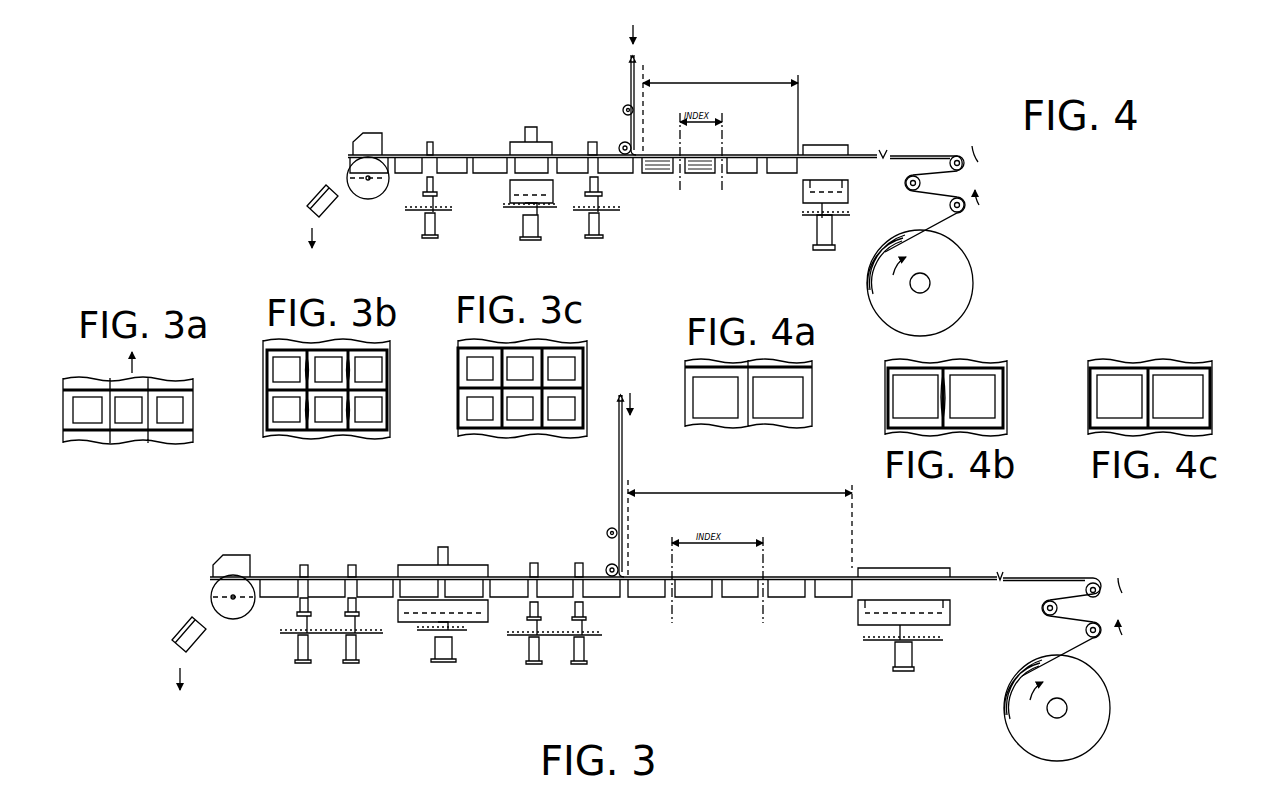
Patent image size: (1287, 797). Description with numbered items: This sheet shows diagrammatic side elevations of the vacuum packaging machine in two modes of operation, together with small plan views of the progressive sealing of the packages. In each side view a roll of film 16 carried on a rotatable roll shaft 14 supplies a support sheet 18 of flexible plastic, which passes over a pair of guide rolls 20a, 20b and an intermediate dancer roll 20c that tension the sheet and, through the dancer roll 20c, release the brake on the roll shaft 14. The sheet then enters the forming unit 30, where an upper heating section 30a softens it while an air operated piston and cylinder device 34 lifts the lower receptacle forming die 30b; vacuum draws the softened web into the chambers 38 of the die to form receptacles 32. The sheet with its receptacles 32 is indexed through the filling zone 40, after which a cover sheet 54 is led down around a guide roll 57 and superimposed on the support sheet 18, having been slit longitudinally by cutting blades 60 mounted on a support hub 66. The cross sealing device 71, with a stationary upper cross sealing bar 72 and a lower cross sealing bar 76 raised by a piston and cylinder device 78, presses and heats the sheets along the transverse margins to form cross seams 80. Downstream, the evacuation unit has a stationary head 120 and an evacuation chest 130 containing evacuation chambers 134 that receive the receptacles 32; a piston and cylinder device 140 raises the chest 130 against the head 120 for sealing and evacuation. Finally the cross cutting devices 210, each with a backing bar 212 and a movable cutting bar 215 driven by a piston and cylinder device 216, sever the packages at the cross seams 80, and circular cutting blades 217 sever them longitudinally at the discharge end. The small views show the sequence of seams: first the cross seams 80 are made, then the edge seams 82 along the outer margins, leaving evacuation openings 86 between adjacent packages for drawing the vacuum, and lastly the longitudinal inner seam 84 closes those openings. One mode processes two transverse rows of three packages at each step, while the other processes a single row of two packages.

In FIG. 4, the roll shaft 14 is at (918, 290).
In FIG. 3, the roll shaft 14 is at (1058, 712).
In FIG. 4, the roll of film 16 is at (960, 292).
In FIG. 3, the roll of film 16 is at (1100, 688).
In FIG. 4, the support sheet 18 is at (923, 155).
In FIG. 3a, the support sheet 18 is at (92, 440).
In FIG. 3b, the support sheet 18 is at (382, 433).
In FIG. 3c, the support sheet 18 is at (482, 432).
In FIG. 4a, the support sheet 18 is at (748, 393).
In FIG. 4b, the support sheet 18 is at (946, 397).
In FIG. 4c, the support sheet 18 is at (1150, 397).
In FIG. 3, the support sheet 18 is at (1065, 577).
In FIG. 4, the guide roll 20a is at (950, 207).
In FIG. 3, the guide roll 20a is at (1086, 631).
In FIG. 4, the guide roll 20b is at (950, 164).
In FIG. 3, the guide roll 20b is at (1086, 590).
In FIG. 4, the dancer roll 20c is at (920, 184).
In FIG. 3, the dancer roll 20c is at (1058, 609).
In FIG. 4, the forming unit 30 is at (862, 140).
In FIG. 3, the forming unit 30 is at (965, 572).
In FIG. 4, the upper heating section 30a is at (833, 145).
In FIG. 3, the upper heating section 30a is at (937, 568).
In FIG. 4, the lower receptacle forming die 30b is at (849, 203).
In FIG. 3, the lower receptacle forming die 30b is at (951, 622).
In FIG. 4, the receptacles 32 is at (773, 153).
In FIG. 3a, the receptacles 32 is at (73, 405).
In FIG. 3b, the receptacles 32 is at (327, 389).
In FIG. 3c, the receptacles 32 is at (521, 388).
In FIG. 4a, the receptacles 32 is at (722, 418).
In FIG. 4b, the receptacles 32 is at (944, 396).
In FIG. 4c, the receptacles 32 is at (1150, 396).
In FIG. 3, the receptacles 32 is at (815, 594).
In FIG. 4, the air operated piston and cylinder device 34 is at (817, 232).
In FIG. 3, the air operated piston and cylinder device 34 is at (895, 655).
In FIG. 4, the chambers 38 is at (803, 193).
In FIG. 3, the chambers 38 is at (950, 603).
In FIG. 4, the filling zone 40 is at (745, 84).
In FIG. 3, the filling zone 40 is at (752, 494).
In FIG. 4, the cover sheet 54 is at (638, 57).
In FIG. 3, the cover sheet 54 is at (625, 473).
In FIG. 4, the guide roll 57 is at (623, 142).
In FIG. 3, the guide roll 57 is at (610, 564).
In FIG. 4, the cutting blades 60 is at (637, 112).
In FIG. 3, the cutting blades 60 is at (626, 538).
In FIG. 4, the support hub 66 is at (625, 105).
In FIG. 3, the support hub 66 is at (609, 528).
In FIG. 3, the cross sealing device 71 is at (543, 546).
In FIG. 4, the upper cross sealing bar 72 is at (588, 142).
In FIG. 3, the upper cross sealing bar 72 is at (576, 563).
In FIG. 4, the lower cross sealing bar 76 is at (600, 187).
In FIG. 3, the lower cross sealing bar 76 is at (541, 614).
In FIG. 4, the air operated piston and cylinder device 78 is at (600, 222).
In FIG. 3, the air operated piston and cylinder device 78 is at (542, 652).
In FIG. 3a, the cross seam 80 is at (180, 388).
In FIG. 3b, the cross seam 80 is at (312, 433).
In FIG. 4a, the cross seam 80 is at (812, 372).
In FIG. 3b, the edge seams 82 is at (267, 368).
In FIG. 3c, the edge seams 82 is at (585, 365).
In FIG. 4b, the edge seams 82 is at (887, 388).
In FIG. 4c, the edge seams 82 is at (1150, 398).
In FIG. 3c, the longitudinal inner seam 84 is at (538, 423).
In FIG. 4c, the longitudinal inner seam 84 is at (1150, 370).
In FIG. 3b, the evacuation openings 86 is at (348, 360).
In FIG. 4b, the evacuation openings 86 is at (947, 380).
In FIG. 4, the stationary head 120 is at (520, 142).
In FIG. 3, the stationary head 120 is at (490, 565).
In FIG. 4, the evacuation chest 130 is at (548, 200).
In FIG. 3, the evacuation chest 130 is at (486, 615).
In FIG. 4, the evacuation chambers 134 is at (510, 193).
In FIG. 3, the evacuation chambers 134 is at (417, 622).
In FIG. 4, the air operated piston and cylinder device 140 is at (525, 228).
In FIG. 3, the air operated piston and cylinder device 140 is at (452, 652).
In FIG. 4, the cross cutting devices 210 is at (403, 200).
In FIG. 3, the cross cutting devices 210 is at (287, 672).
In FIG. 4, the backing bar 212 is at (430, 142).
In FIG. 3, the backing bar 212 is at (304, 565).
In FIG. 4, the cutting bar 215 is at (435, 186).
In FIG. 3, the cutting bar 215 is at (311, 612).
In FIG. 4, the air operated piston and cylinder device 216 is at (437, 230).
In FIG. 3, the air operated piston and cylinder device 216 is at (345, 651).
In FIG. 4, the circular cutting blades 217 is at (365, 198).
In FIG. 3, the circular cutting blades 217 is at (237, 615).